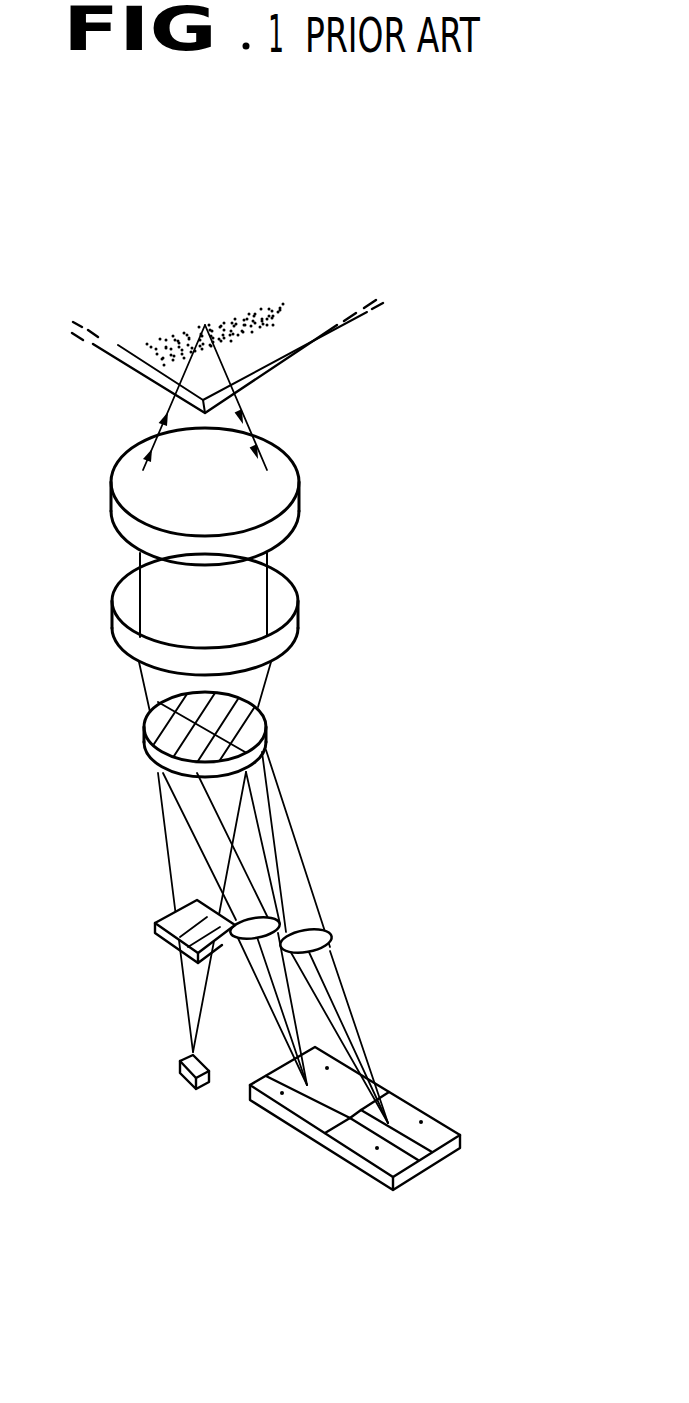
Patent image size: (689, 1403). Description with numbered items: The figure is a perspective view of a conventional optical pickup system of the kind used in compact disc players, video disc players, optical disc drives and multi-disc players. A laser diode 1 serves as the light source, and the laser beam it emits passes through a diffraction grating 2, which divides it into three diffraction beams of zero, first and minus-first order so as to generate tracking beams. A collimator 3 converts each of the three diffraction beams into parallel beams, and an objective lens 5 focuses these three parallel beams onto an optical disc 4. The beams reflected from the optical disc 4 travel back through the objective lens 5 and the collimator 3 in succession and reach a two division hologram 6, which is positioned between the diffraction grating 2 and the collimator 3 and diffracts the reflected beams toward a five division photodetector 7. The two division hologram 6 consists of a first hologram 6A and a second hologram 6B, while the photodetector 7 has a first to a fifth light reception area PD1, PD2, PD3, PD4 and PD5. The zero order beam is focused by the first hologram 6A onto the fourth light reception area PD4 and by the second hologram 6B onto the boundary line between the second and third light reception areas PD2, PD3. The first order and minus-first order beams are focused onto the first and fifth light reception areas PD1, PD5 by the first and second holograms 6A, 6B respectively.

The laser diode 1 is at (180, 1065).
The diffraction grating 2 is at (157, 920).
The collimator 3 is at (135, 643).
The optical disc 4 is at (132, 346).
The objective lens 5 is at (127, 525).
The two division hologram 6 is at (201, 736).
The first hologram 6A is at (146, 729).
The second hologram 6B is at (266, 734).
The five division photodetector 7 is at (358, 1179).
The first light reception area PD1 is at (333, 1128).
The second light reception area PD2 is at (405, 1146).
The third light reception area PD3 is at (403, 1120).
The fourth light reception area PD4 is at (250, 1100).
The fifth light reception area PD5 is at (390, 1103).